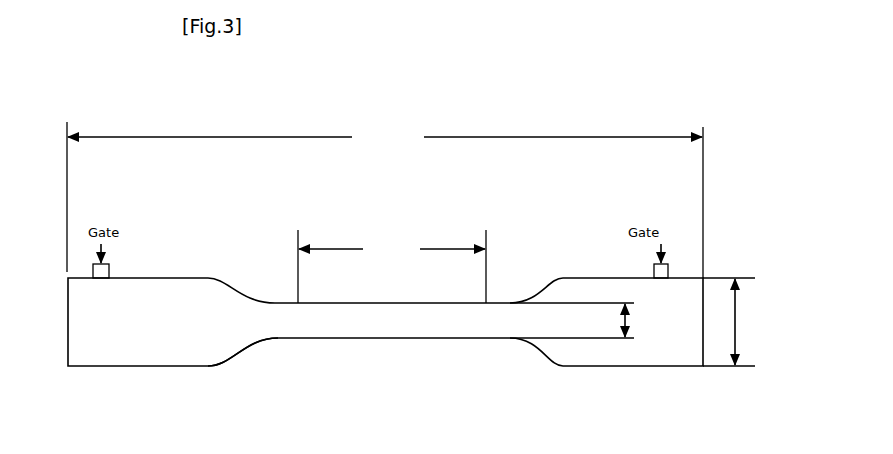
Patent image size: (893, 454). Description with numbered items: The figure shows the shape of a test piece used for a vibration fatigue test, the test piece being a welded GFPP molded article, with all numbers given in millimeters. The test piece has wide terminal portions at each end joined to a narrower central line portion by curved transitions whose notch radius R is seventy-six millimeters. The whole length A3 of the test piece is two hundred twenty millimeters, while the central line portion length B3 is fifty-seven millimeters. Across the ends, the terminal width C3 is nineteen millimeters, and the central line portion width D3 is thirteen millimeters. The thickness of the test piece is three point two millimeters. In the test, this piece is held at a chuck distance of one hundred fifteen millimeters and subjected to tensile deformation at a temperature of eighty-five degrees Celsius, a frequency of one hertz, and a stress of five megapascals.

The whole length A3 is at (404, 123).
The central line portion length B3 is at (404, 226).
The terminal width C3 is at (776, 322).
The central line portion width D3 is at (665, 340).
The notch radius R is at (252, 347).